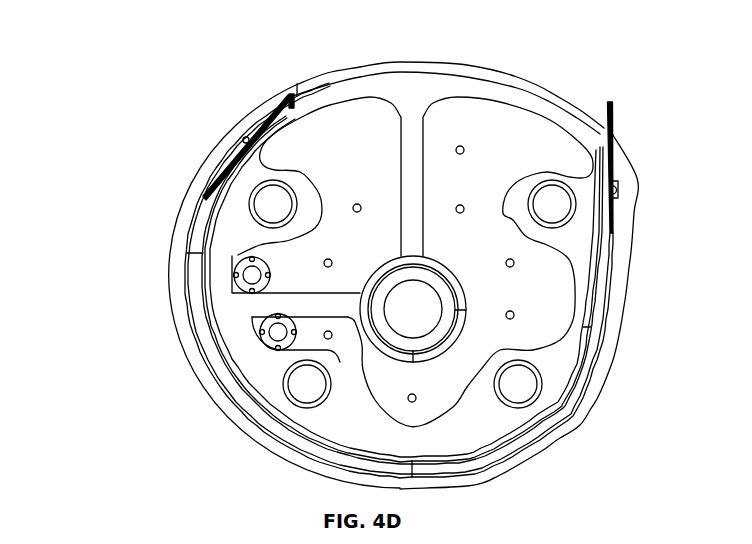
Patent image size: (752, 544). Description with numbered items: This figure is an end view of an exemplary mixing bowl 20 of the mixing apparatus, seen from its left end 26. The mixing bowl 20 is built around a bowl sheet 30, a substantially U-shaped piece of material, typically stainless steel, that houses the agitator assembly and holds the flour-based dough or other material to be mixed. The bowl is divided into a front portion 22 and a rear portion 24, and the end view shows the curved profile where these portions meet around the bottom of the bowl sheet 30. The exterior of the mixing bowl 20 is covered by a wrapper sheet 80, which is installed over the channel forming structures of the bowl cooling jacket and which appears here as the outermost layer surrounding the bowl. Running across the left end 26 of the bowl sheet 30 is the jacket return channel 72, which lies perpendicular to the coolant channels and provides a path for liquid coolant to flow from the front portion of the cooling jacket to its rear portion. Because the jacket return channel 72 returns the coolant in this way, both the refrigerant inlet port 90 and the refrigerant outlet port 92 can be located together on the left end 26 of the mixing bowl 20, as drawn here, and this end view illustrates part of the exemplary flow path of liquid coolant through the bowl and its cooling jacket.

The mixing bowl 20 is at (92, 43).
The front portion 22 is at (640, 335).
The rear portion 24 is at (155, 269).
The left end 26 is at (421, 84).
The bowl sheet 30 is at (613, 111).
The jacket return channel 72 is at (205, 197).
The wrapper sheet 80 is at (592, 405).
The refrigerant inlet port 90 is at (277, 333).
The refrigerant outlet port 92 is at (250, 276).